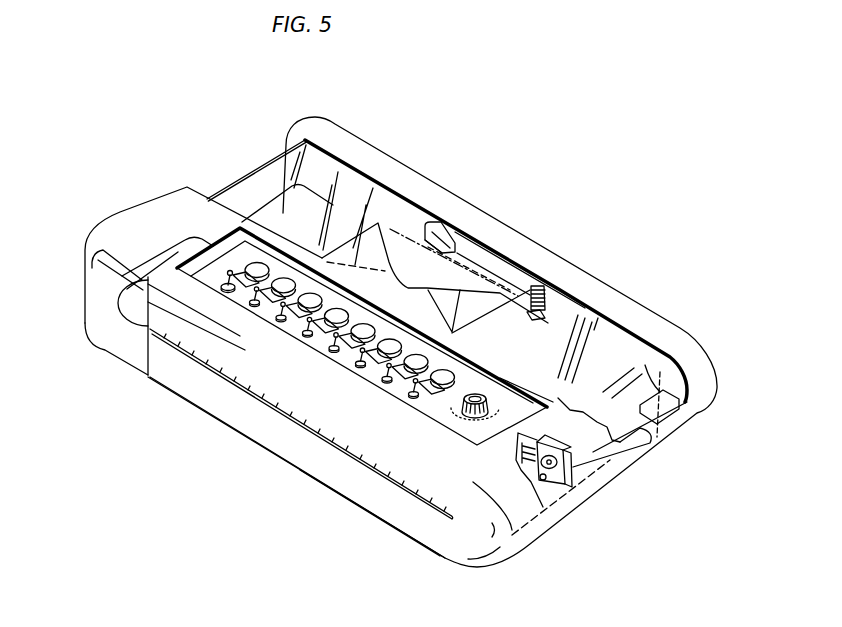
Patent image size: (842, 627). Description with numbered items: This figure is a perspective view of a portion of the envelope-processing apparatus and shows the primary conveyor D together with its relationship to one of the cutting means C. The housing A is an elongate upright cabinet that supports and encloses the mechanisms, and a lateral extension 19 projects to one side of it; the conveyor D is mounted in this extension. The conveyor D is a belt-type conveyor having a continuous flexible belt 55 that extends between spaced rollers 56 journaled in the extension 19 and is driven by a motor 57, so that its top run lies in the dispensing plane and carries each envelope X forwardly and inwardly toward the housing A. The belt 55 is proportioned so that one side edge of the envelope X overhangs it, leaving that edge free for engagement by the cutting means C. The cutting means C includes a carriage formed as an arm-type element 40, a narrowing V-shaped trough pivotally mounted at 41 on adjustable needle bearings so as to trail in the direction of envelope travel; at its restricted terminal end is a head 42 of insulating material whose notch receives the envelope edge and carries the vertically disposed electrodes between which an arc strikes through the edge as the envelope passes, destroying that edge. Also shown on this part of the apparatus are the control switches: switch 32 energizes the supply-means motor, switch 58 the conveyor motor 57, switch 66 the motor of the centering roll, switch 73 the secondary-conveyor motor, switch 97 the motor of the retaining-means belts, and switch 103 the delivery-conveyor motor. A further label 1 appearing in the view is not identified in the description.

The housing 1 is at (159, 381).
The housing A is at (259, 424).
The lateral extension 19 is at (350, 476).
The motor 57 is at (120, 289).
The switch 103 is at (279, 324).
The switch 97 is at (306, 338).
The switch 73 is at (333, 353).
The switch 66 is at (360, 368).
The switch 58 is at (388, 384).
The switch 32 is at (416, 399).
The envelope X is at (397, 225).
The cutting means C is at (492, 264).
The head 42 is at (452, 216).
The arm-type element 40 is at (530, 264).
The pivot 41 is at (565, 272).
The primary conveyor D is at (598, 356).
The belt 55 is at (612, 373).
The rollers 56 is at (578, 476).